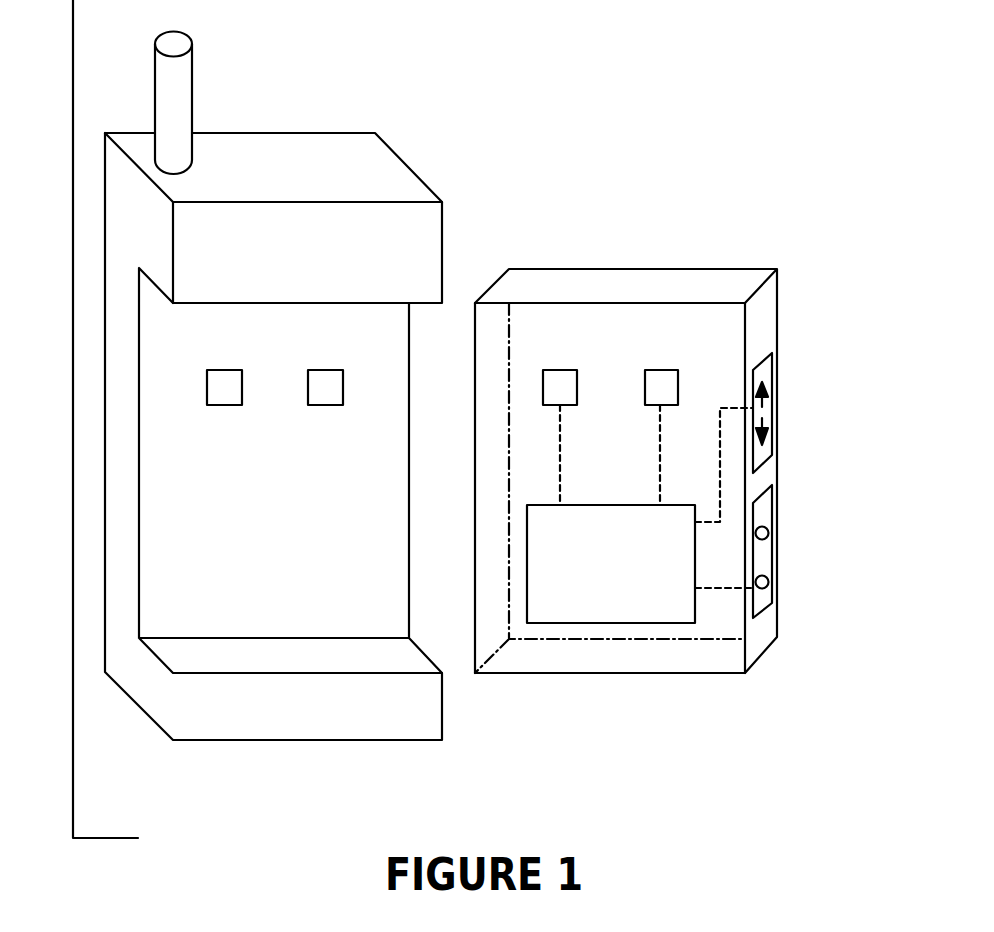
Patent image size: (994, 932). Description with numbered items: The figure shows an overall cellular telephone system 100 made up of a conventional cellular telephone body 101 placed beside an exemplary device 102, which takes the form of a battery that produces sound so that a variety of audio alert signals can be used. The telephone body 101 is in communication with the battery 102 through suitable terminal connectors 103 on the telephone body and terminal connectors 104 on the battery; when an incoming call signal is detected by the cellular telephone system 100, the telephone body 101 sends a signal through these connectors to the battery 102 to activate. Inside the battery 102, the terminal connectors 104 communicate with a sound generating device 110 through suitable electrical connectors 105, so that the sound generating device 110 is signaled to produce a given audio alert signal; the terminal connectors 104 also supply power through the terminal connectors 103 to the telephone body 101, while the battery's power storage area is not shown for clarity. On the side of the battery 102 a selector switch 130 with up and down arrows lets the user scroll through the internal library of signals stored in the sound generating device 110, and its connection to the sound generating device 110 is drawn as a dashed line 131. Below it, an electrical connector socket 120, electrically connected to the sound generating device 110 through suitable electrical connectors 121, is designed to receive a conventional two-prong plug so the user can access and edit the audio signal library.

The cellular telephone system 100 is at (75, 419).
The cellular telephone body 101 is at (298, 740).
The battery 102 is at (542, 673).
The terminal connectors 103 is at (327, 405).
The terminal connectors 104 is at (660, 370).
The electrical connectors 105 is at (658, 488).
The sound generating device 110 is at (560, 623).
The electrical connector socket 120 is at (772, 570).
The electrical connectors 121 is at (737, 590).
The selector switch 130 is at (772, 412).
The connection from rocker control to sound generating device 131 is at (718, 472).